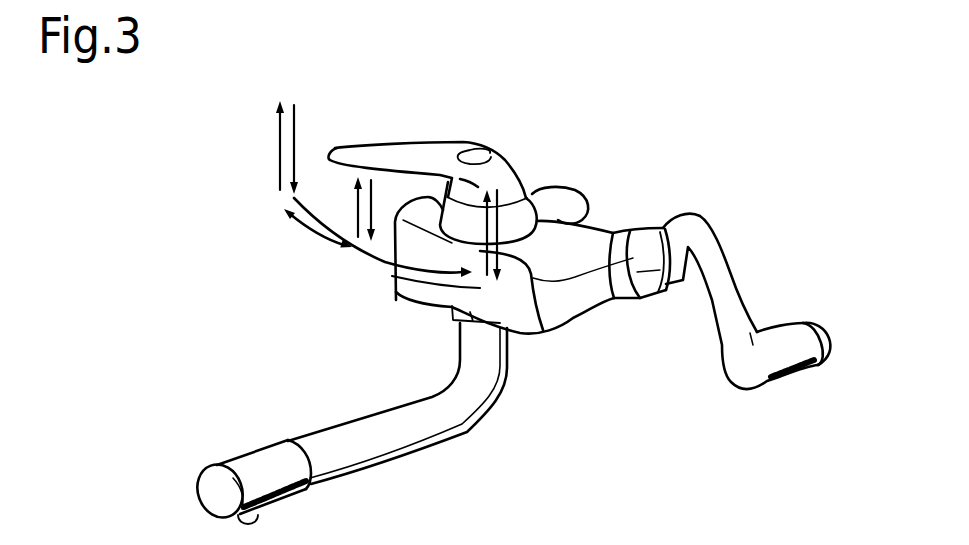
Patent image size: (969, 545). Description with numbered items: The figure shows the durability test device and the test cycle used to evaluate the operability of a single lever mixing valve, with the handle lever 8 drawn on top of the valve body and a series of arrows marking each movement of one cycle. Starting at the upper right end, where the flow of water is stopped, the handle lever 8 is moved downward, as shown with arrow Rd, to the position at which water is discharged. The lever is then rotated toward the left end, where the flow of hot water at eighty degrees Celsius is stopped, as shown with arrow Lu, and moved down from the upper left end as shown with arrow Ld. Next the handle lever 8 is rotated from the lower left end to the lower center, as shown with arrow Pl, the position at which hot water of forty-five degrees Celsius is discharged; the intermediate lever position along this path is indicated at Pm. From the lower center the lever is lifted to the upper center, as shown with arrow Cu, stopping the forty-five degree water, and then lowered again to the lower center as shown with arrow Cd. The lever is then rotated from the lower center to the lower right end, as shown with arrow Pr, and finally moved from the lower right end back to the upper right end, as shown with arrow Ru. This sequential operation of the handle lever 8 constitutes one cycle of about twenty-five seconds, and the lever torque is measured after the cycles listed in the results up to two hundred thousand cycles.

The handle lever 8 is at (382, 152).
The arrow Lu is at (278, 146).
The arrow Ld is at (296, 160).
The arrow Cu is at (362, 203).
The arrow Cd is at (376, 216).
The arrow Ru is at (488, 190).
The arrow Rd is at (500, 253).
The arrow Pl is at (332, 238).
The middle lever position Pm is at (372, 247).
The arrow Pr is at (434, 288).